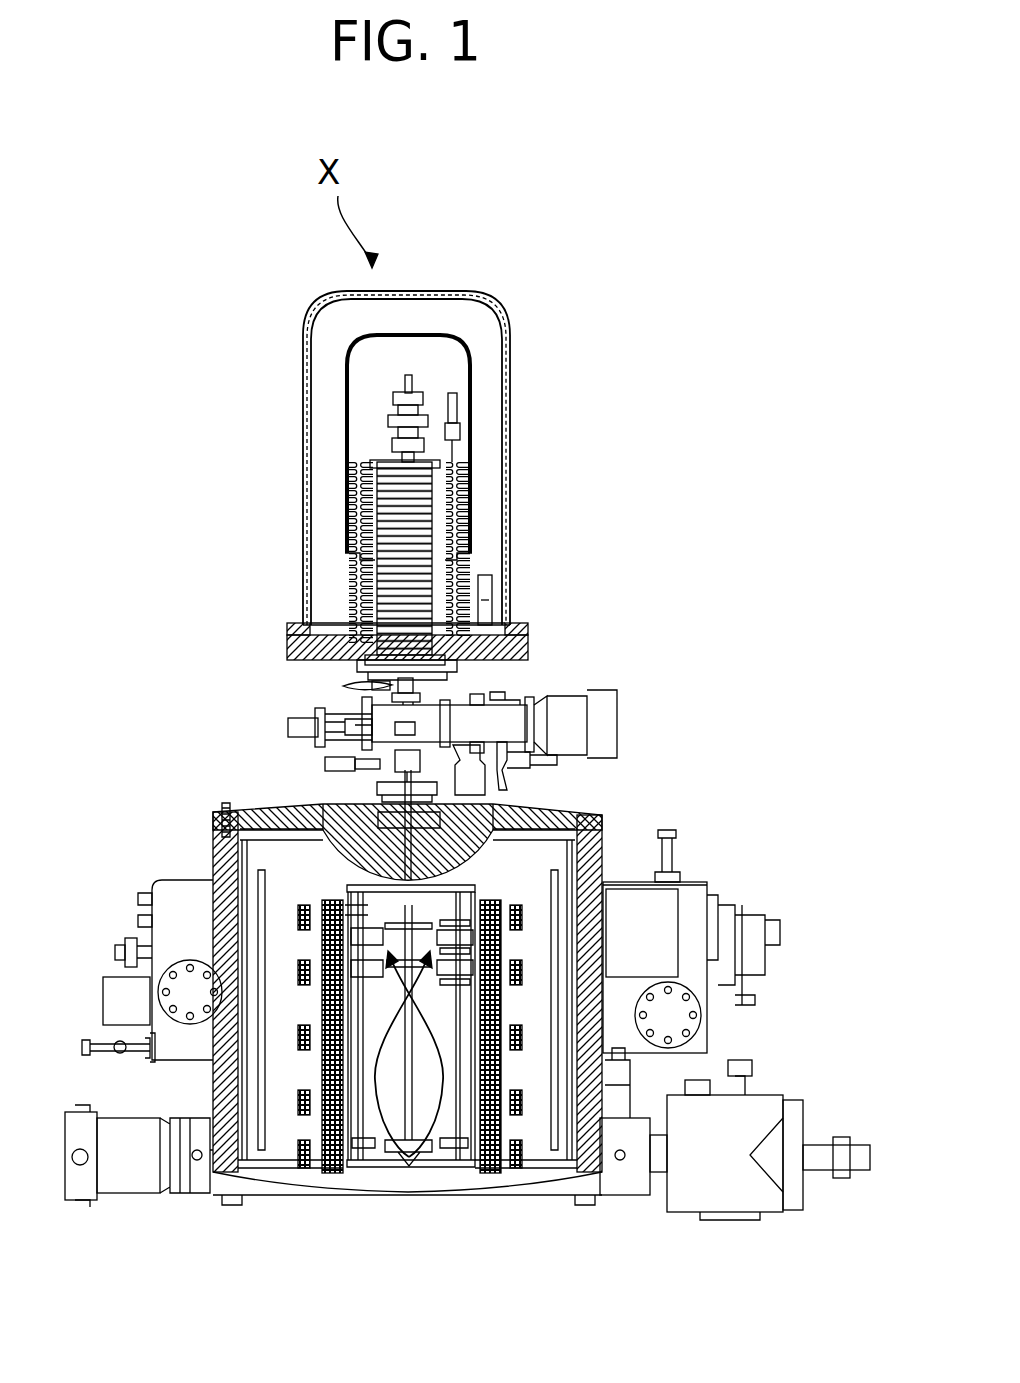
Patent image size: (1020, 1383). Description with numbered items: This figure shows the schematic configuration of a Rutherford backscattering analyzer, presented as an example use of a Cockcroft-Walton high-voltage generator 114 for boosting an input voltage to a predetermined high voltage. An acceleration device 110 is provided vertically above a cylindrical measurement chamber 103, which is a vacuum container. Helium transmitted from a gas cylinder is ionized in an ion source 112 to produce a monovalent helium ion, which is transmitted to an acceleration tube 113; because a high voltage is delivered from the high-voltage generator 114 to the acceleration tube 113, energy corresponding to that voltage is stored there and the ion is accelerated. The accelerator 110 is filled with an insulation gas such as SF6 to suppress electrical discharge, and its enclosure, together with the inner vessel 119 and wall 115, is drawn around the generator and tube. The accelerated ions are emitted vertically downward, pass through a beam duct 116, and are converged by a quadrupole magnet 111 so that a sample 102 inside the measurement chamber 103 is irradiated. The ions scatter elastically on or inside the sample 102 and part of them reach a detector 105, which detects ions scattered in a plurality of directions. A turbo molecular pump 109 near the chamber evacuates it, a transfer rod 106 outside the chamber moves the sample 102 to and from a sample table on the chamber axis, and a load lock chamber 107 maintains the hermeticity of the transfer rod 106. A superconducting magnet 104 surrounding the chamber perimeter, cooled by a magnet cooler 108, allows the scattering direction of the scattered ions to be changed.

The sample 102 is at (412, 1095).
The measurement chamber 103 is at (450, 1068).
The superconducting magnet 104 is at (280, 1120).
The detector 105 is at (393, 908).
The transfer rod 106 is at (838, 1180).
The load lock chamber 107 is at (680, 1195).
The magnet cooler 108 is at (690, 880).
The turbo molecular pump 109 is at (135, 1178).
The acceleration device 110 is at (538, 343).
The quadrupole magnet 111 is at (368, 790).
The ion source 112 is at (416, 388).
The acceleration tube 113 is at (412, 517).
The Cockcroft-Walton high-voltage generator 114 is at (358, 522).
The bell wall 115 is at (508, 378).
The beam duct 116 is at (423, 683).
The inner vessel 119 is at (358, 368).